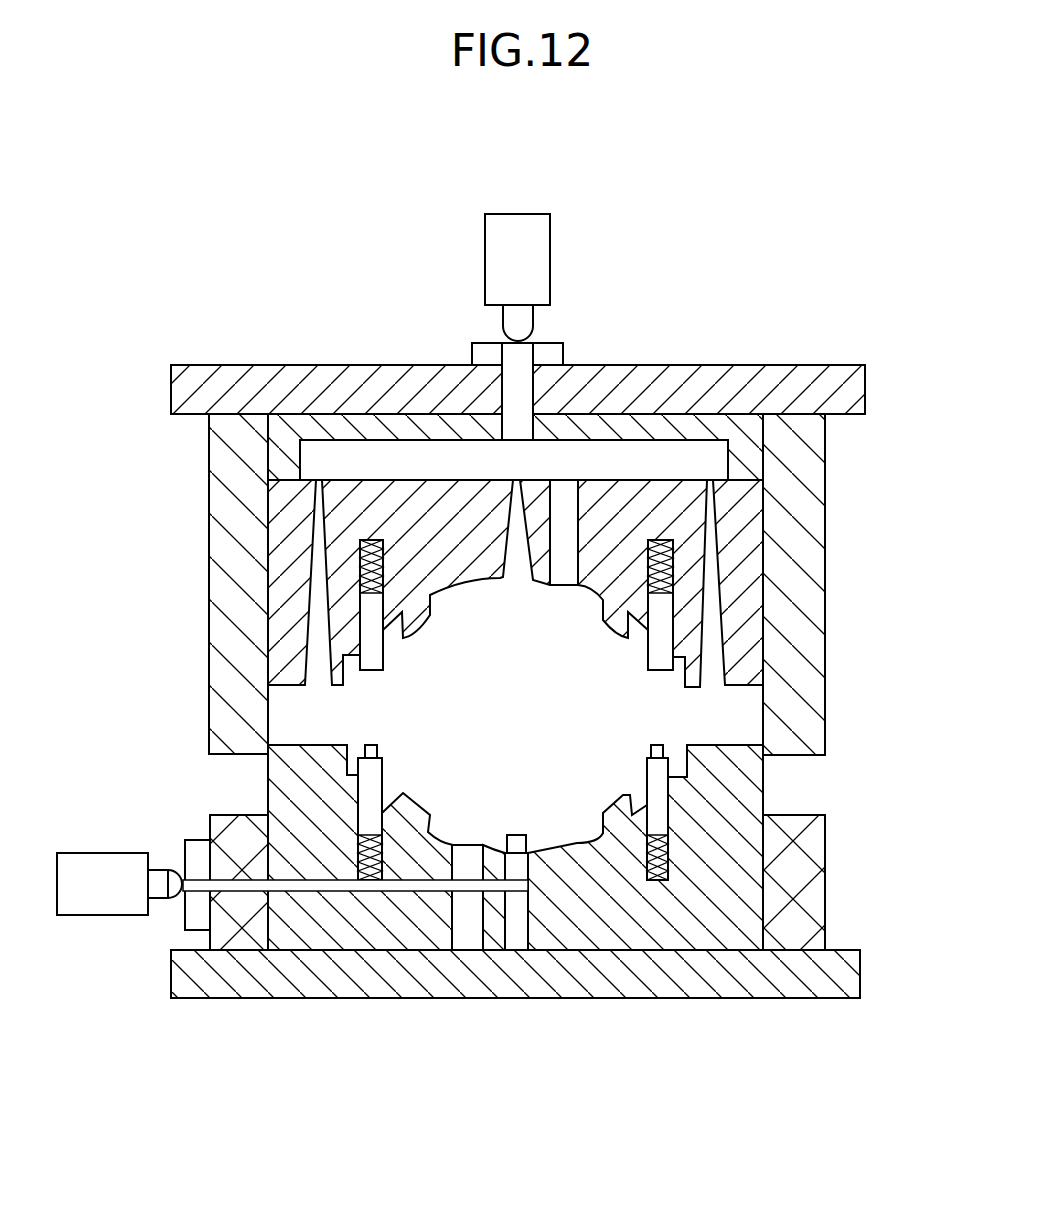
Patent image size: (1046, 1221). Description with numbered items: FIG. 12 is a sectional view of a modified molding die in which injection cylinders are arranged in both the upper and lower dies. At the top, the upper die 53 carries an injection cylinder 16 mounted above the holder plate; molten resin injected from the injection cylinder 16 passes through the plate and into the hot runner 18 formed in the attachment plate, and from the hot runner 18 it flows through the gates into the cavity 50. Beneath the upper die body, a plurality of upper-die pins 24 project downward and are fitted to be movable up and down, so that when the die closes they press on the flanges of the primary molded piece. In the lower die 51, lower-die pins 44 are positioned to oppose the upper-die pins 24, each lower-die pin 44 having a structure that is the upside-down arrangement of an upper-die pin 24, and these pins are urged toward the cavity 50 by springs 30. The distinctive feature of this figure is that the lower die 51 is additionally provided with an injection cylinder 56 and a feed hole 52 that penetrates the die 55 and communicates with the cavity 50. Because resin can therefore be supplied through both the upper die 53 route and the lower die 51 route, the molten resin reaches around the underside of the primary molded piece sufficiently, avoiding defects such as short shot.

The injection cylinder 16 is at (522, 228).
The hot runner 18 is at (668, 455).
The upper-die pins 24 is at (660, 622).
The springs 30 is at (665, 558).
The lower-die pins 44 is at (660, 795).
The cavity 50 is at (642, 708).
The lower die 51 is at (202, 812).
The feed hole 52 is at (333, 892).
The upper die 53 is at (241, 358).
The die 55 is at (600, 907).
The injection cylinder 56 is at (95, 918).